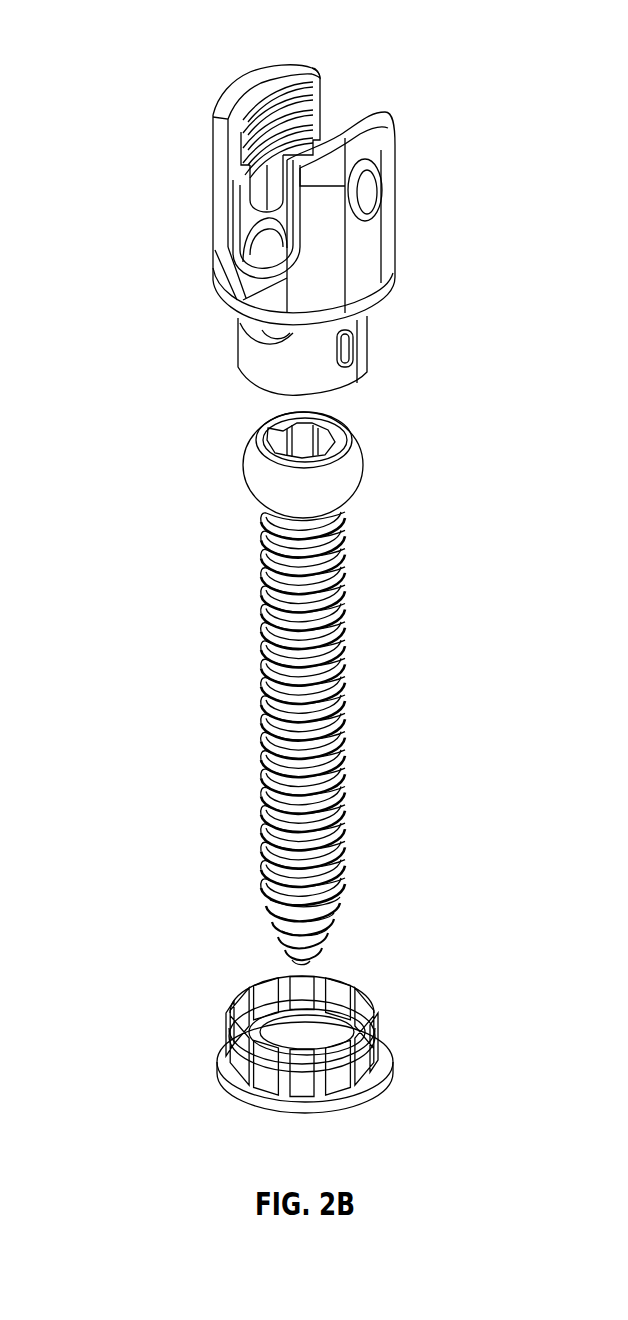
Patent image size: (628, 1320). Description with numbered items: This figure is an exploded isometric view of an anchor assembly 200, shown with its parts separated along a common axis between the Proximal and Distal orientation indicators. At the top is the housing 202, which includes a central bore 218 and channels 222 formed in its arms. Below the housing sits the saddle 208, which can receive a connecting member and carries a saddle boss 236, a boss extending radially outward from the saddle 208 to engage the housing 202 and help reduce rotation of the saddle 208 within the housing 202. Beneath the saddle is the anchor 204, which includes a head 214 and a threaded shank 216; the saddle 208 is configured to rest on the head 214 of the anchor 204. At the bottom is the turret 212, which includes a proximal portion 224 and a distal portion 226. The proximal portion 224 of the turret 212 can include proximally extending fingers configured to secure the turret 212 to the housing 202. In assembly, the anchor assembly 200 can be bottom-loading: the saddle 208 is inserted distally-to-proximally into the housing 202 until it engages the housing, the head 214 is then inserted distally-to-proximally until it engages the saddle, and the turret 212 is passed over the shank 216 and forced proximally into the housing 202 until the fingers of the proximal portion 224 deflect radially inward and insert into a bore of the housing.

The anchor assembly 200 is at (118, 22).
The housing 202 is at (420, 192).
The central bore 218 is at (289, 97).
The channels 222 is at (237, 203).
The saddle 208 is at (313, 387).
The saddle boss 236 is at (352, 350).
The anchor 204 is at (249, 705).
The head 214 is at (346, 476).
The shank 216 is at (267, 733).
The turret 212 is at (217, 1022).
The proximal portion 224 is at (357, 993).
The distal portion 226 is at (387, 1063).